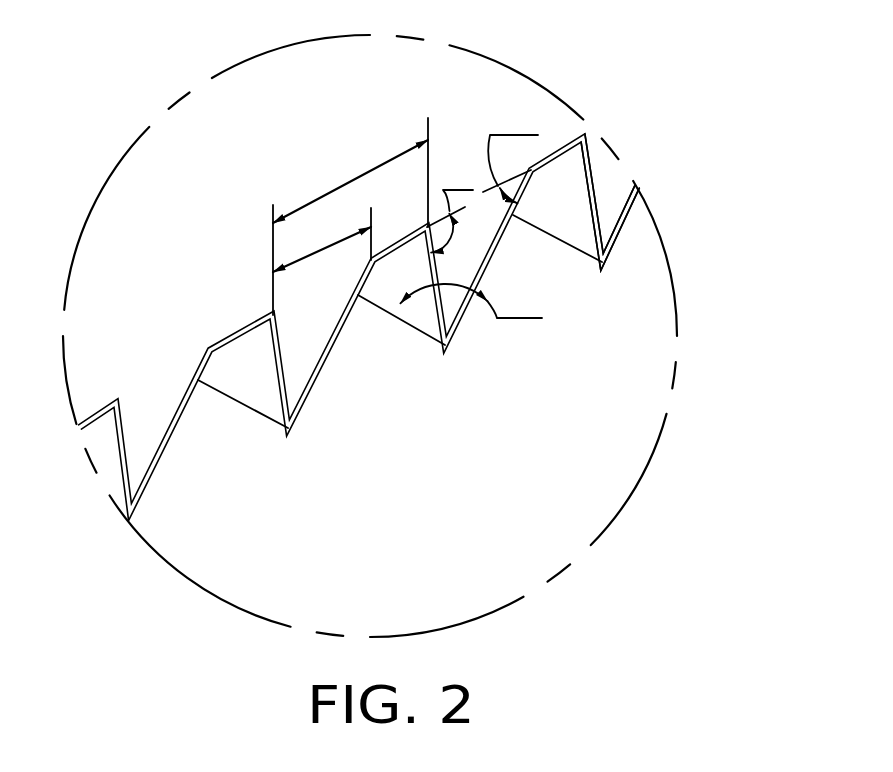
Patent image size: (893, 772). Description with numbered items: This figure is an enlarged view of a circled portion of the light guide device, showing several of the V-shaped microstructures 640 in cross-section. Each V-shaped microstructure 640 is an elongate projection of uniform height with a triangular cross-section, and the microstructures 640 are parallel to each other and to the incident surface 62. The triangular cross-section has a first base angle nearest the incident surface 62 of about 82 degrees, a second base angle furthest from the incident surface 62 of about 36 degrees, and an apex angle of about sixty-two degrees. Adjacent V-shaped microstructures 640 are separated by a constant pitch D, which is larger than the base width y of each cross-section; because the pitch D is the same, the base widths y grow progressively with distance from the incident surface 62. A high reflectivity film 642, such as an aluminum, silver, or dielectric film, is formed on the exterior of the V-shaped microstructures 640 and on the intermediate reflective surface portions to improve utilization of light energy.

The V-shaped microstructures 640 is at (298, 357).
The high reflectivity film 642 is at (617, 232).
The pitch D is at (350, 216).
The base width y is at (322, 240).
The value of angle θ1 82 is at (458, 182).
The value of angle θ2 36 is at (513, 141).
The incident surface 62 is at (522, 298).